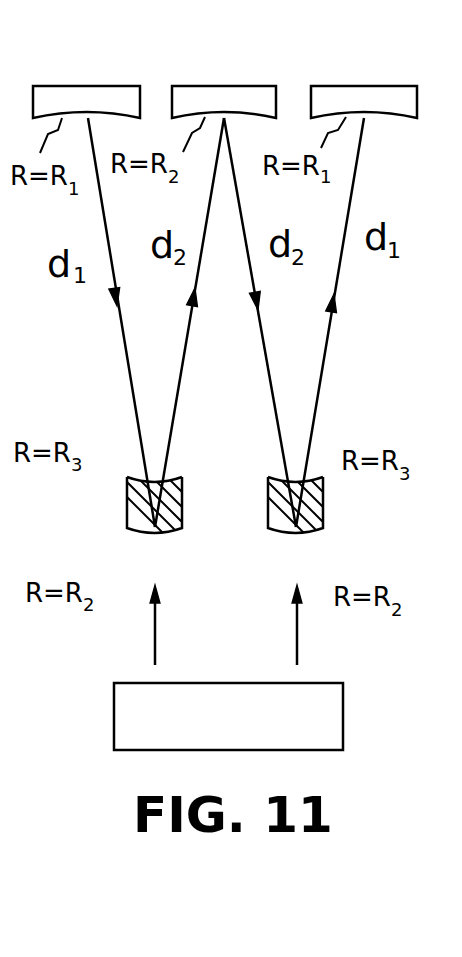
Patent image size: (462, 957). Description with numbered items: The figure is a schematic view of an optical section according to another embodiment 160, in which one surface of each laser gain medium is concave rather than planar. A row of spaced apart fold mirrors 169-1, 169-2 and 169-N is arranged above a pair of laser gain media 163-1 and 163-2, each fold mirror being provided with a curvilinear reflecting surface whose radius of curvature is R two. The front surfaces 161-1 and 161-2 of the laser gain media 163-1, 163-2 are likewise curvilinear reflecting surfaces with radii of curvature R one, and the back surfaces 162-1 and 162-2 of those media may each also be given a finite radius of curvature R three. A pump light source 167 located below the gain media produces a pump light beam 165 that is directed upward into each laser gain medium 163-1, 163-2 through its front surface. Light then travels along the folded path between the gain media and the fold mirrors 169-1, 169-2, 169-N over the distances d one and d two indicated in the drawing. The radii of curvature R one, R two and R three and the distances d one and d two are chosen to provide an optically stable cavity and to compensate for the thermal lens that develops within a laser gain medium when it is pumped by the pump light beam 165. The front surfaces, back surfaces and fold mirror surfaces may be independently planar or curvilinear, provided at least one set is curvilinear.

The embodiment 160 is at (262, 38).
The fold mirror 169-1 is at (88, 84).
The fold mirror 169-2 is at (200, 82).
The fold mirror 169-N is at (350, 83).
The front surface 161-1 is at (91, 485).
The front surface 161-2 is at (349, 488).
The back surface 162-1 is at (143, 480).
The back surface 162-2 is at (313, 478).
The laser gain medium 163-1 is at (127, 505).
The laser gain medium 163-2 is at (323, 497).
The pump light beam 165 is at (152, 638).
The pump light source 167 is at (346, 705).